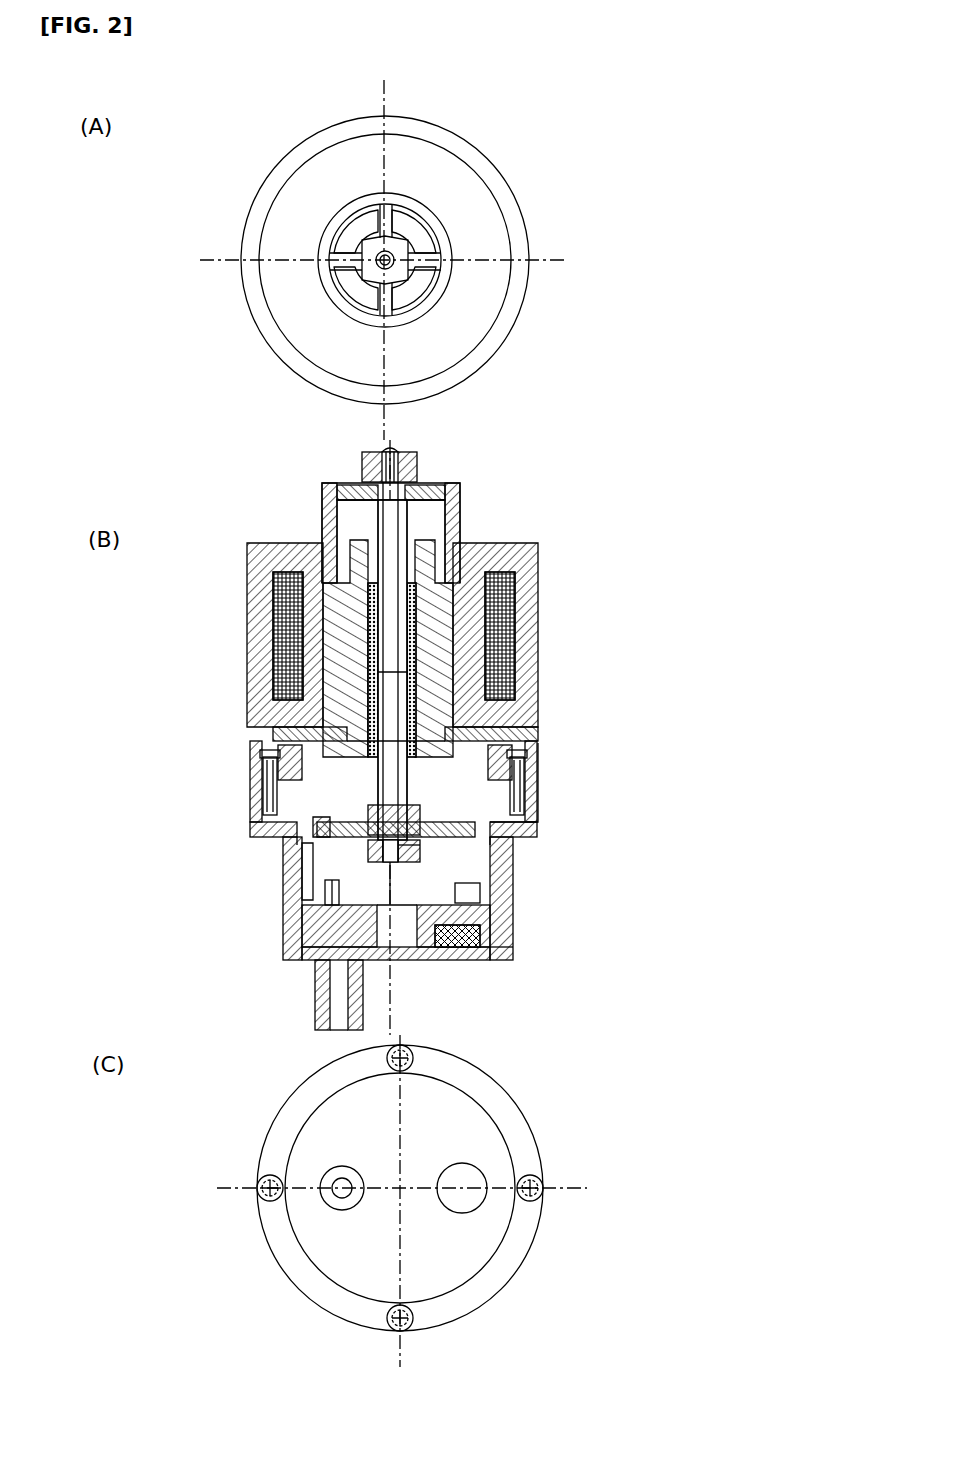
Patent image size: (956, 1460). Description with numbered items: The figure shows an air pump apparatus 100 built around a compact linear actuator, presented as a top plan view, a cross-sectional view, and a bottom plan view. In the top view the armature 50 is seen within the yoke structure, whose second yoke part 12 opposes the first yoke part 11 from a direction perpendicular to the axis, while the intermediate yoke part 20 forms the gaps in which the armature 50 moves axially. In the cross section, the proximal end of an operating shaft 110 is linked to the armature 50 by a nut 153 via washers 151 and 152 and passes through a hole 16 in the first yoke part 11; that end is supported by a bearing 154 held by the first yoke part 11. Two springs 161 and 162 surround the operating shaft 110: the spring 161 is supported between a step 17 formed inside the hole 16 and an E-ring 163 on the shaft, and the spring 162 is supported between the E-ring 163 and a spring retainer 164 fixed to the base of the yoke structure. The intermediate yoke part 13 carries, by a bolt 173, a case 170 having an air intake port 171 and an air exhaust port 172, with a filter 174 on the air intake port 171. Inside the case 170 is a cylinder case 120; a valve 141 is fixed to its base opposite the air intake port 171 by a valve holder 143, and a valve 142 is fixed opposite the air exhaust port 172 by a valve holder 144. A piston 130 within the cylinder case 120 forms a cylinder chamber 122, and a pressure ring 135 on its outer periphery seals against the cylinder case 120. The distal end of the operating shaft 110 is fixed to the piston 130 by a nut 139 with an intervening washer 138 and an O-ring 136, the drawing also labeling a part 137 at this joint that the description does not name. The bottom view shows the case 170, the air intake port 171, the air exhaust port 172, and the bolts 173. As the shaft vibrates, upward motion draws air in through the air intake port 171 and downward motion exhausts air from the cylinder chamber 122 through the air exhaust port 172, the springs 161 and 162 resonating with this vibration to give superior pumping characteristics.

The air pump apparatus 100 is at (555, 125).
The armature 50 is at (410, 195).
The nut 153 is at (372, 243).
The second yoke part 12 is at (518, 232).
The intermediate yoke part 20 is at (490, 290).
The washer 151 is at (360, 487).
The washer 152 is at (350, 500).
The operating shaft 110 is at (396, 516).
The bearing 154 is at (440, 520).
The hole 16 is at (465, 560).
The step 17 is at (268, 580).
The spring 161 is at (273, 640).
The first yoke part 11 is at (345, 695).
The intermediate yoke part 13 is at (520, 735).
The E-ring 163 is at (270, 752).
The spring 162 is at (262, 775).
The bolt 173 is at (262, 800).
The O-ring 136 is at (537, 782).
The spring retainer 164 is at (280, 830).
The pressure ring 135 is at (290, 838).
The hub 137 is at (378, 810).
The piston 130 is at (352, 845).
The washer 138 is at (385, 862).
The nut 139 is at (420, 850).
The cylinder case 120 is at (292, 860).
The valve 142 is at (300, 910).
The valve holder 144 is at (296, 930).
The valve holder 143 is at (475, 888).
The valve 141 is at (490, 915).
The case 170 is at (290, 945).
The filter 174 is at (490, 958).
The cylinder chamber 122 is at (395, 930).
The air intake port 171 is at (455, 945).
The air exhaust port 172 is at (318, 990).